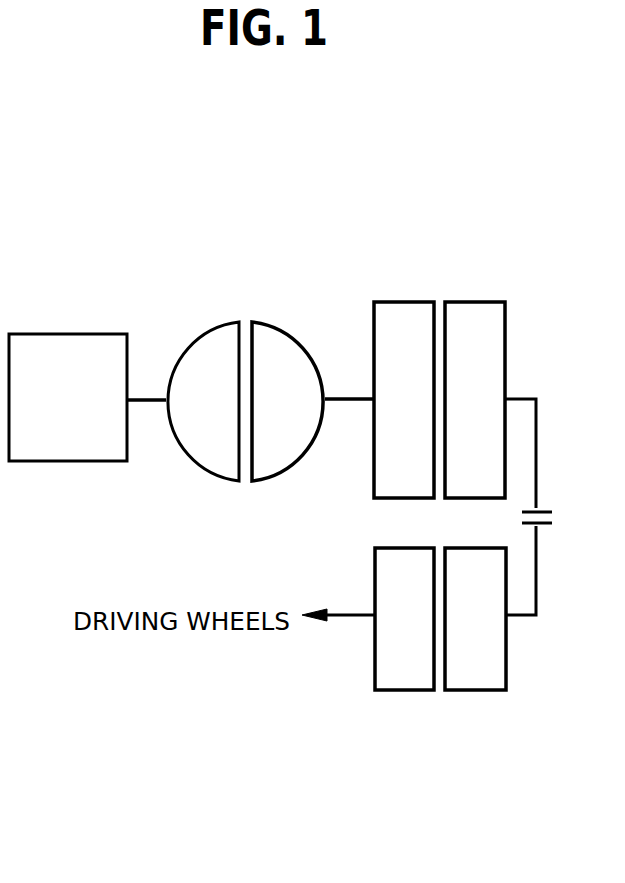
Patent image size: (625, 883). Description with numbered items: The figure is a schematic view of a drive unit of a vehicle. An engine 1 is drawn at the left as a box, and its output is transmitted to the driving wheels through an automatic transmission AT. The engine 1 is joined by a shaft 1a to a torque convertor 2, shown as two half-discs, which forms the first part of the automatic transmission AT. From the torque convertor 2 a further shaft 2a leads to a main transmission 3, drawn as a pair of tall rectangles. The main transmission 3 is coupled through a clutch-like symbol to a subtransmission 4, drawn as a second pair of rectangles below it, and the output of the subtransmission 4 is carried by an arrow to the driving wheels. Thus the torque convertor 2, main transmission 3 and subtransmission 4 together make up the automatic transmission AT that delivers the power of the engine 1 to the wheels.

The engine 1 is at (56, 333).
The engine output shaft 1a is at (142, 403).
The automatic transmission AT is at (249, 251).
The torque convertor 2 is at (290, 331).
The turbine shaft / transmission input shaft 2a is at (345, 404).
The main transmission 3 is at (440, 298).
The subtransmission 4 is at (444, 694).